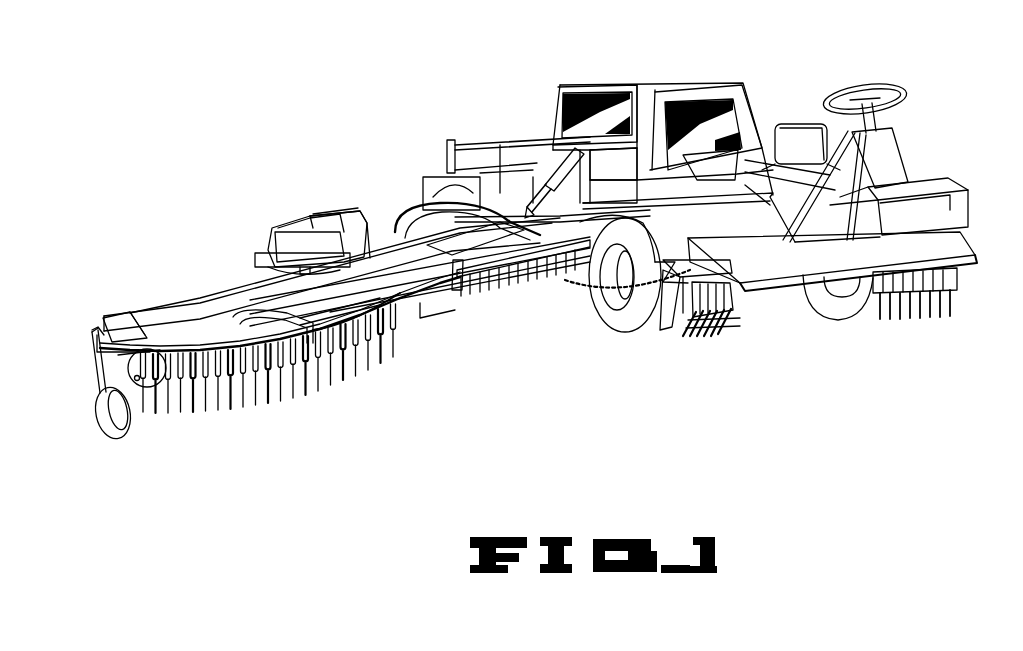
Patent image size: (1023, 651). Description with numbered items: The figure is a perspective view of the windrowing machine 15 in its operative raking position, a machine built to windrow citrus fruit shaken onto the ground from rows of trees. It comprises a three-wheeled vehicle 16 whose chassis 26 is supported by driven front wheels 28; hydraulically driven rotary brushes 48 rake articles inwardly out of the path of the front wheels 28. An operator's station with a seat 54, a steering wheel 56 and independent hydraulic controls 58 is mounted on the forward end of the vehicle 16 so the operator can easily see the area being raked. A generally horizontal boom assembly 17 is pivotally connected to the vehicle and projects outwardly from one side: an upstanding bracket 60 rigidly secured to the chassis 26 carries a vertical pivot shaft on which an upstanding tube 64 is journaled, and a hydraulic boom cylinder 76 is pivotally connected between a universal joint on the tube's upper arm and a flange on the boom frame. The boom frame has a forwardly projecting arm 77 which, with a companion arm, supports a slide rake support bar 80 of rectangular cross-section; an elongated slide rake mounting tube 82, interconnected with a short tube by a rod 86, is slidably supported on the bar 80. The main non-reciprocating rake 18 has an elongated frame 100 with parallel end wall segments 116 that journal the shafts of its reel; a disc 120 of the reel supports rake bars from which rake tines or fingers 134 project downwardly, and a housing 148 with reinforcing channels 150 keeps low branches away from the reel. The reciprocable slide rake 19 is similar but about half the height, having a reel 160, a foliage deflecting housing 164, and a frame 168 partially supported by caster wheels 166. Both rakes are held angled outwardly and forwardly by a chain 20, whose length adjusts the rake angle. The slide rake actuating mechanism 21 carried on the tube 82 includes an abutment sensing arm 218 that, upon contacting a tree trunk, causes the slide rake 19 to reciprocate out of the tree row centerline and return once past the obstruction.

The windrowing machine 15 is at (424, 81).
The three-wheeled vehicle 16 is at (957, 180).
The boom assembly 17 is at (628, 214).
The main non-reciprocating rake 18 is at (272, 223).
The reciprocable slide rake 19 is at (143, 309).
The chain 20 is at (575, 288).
The slide rake actuating mechanism 21 is at (126, 355).
The chassis 26 is at (963, 243).
The driven front wheels 28 is at (623, 330).
The rotary brushes 48 is at (722, 324).
The seat 54 is at (808, 128).
The steering wheel 56 is at (855, 95).
The independent hydraulic controls 58 is at (762, 190).
The upstanding bracket 60 is at (595, 152).
The upstanding tube 64 is at (590, 188).
The hydraulic boom cylinder 76 is at (561, 167).
The forwardly projecting arm 77 is at (384, 258).
The slide rake support bar 80 is at (523, 281).
The elongated slide rake mounting tube 82 is at (351, 330).
The rod 86 is at (403, 300).
The elongated frame 100 is at (267, 253).
The end wall segments 116 is at (270, 267).
The disc 120 is at (263, 283).
The rake tines or fingers 134 is at (518, 282).
The housing 148 is at (302, 226).
The reinforcing channels 150 is at (327, 212).
The reel 160 is at (235, 394).
The foliage deflecting housing 164 is at (195, 307).
The caster wheels 166 is at (107, 420).
The frame 168 is at (128, 350).
The abutment sensing arm 218 is at (110, 332).